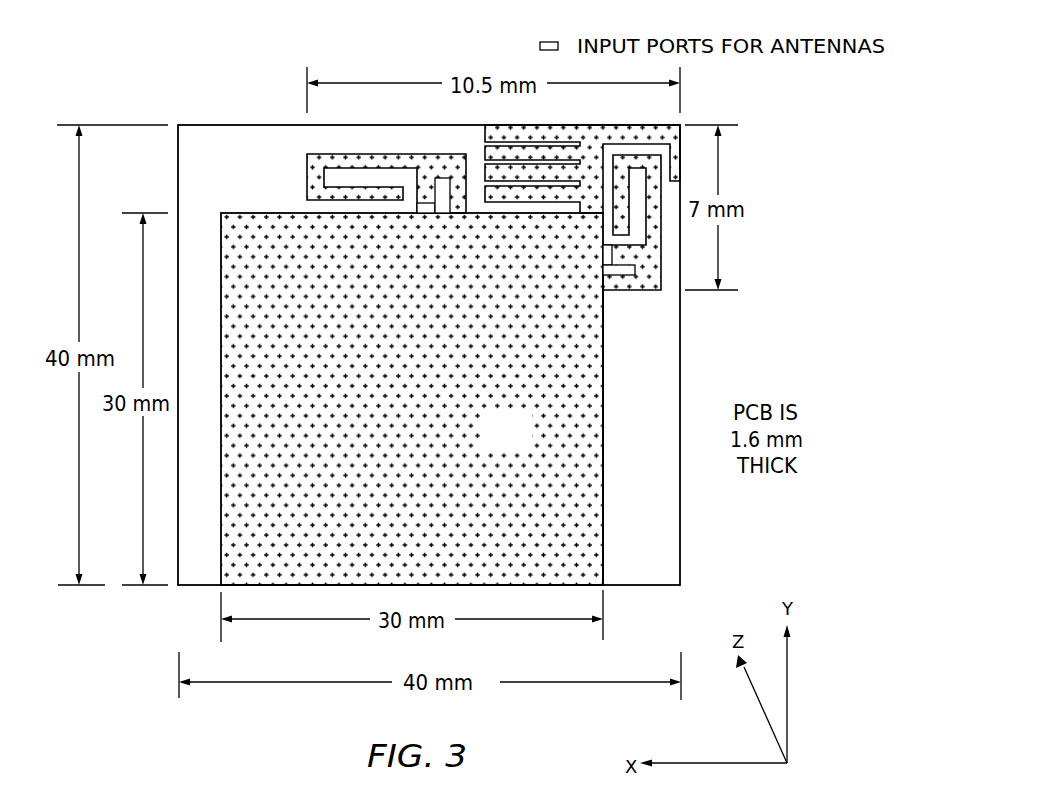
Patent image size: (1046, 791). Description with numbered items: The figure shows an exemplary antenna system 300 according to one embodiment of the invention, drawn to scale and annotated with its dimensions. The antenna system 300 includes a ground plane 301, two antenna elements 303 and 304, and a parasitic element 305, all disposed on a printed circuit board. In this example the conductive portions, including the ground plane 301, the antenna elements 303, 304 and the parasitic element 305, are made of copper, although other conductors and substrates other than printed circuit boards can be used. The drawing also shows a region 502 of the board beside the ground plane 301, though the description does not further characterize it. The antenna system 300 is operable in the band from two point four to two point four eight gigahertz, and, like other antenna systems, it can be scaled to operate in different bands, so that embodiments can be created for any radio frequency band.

The antenna system 300 is at (174, 621).
The ground plane 301 is at (522, 443).
The antenna element 303 is at (312, 157).
The antenna element 304 is at (662, 237).
The parasitic element 305 is at (543, 125).
The ground-free region 502 is at (658, 508).